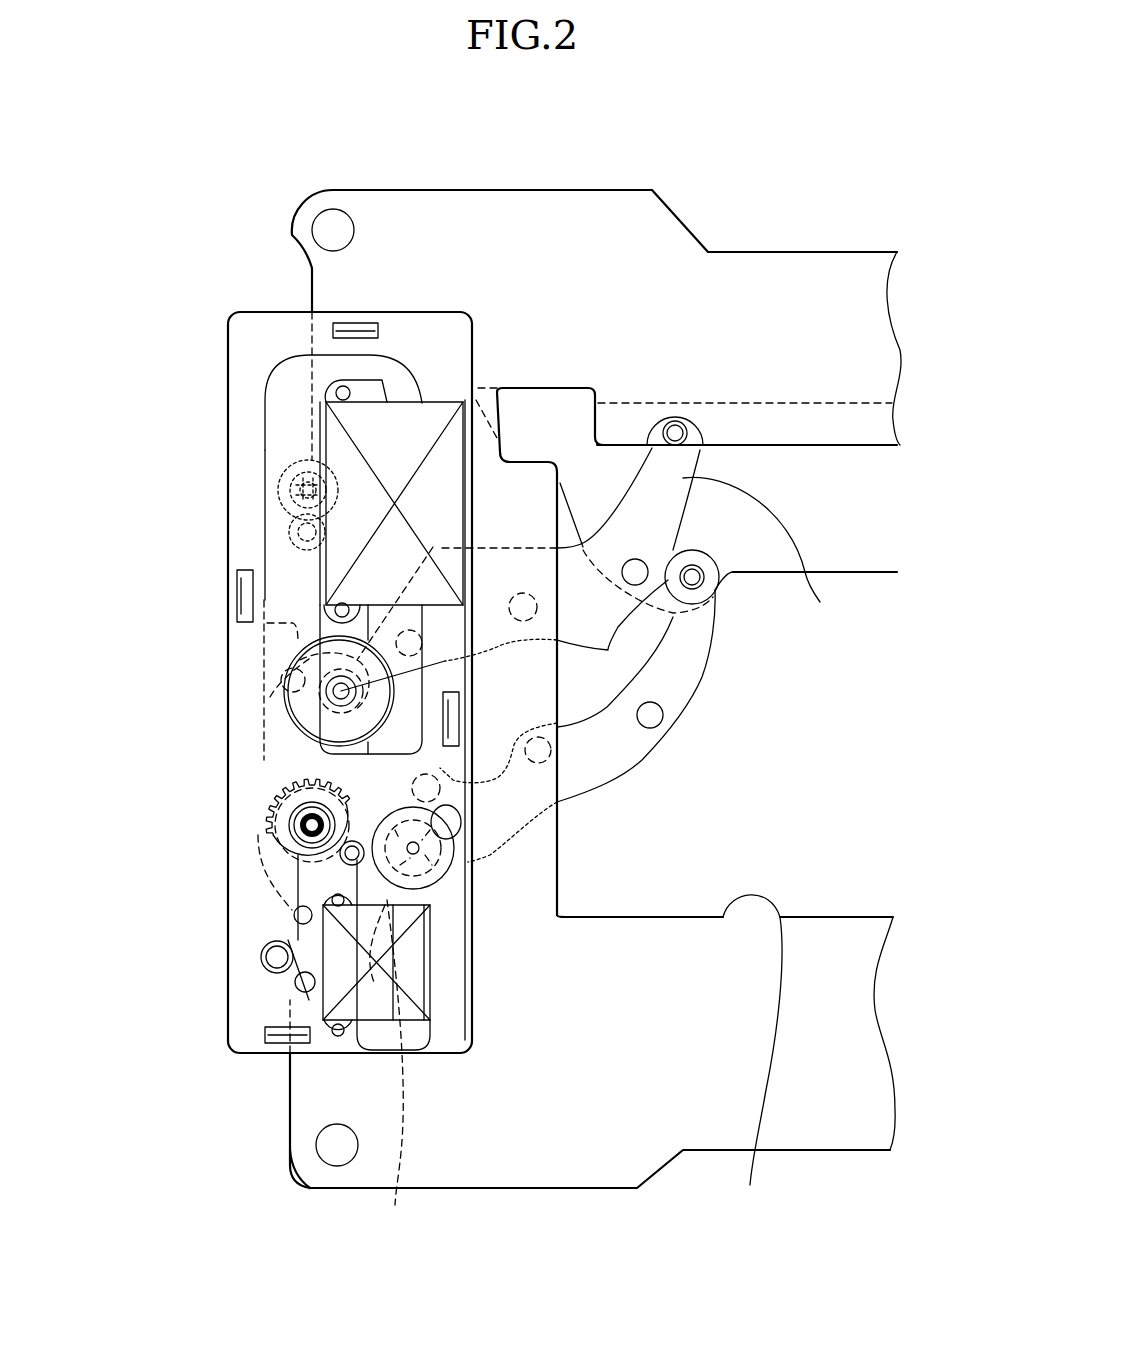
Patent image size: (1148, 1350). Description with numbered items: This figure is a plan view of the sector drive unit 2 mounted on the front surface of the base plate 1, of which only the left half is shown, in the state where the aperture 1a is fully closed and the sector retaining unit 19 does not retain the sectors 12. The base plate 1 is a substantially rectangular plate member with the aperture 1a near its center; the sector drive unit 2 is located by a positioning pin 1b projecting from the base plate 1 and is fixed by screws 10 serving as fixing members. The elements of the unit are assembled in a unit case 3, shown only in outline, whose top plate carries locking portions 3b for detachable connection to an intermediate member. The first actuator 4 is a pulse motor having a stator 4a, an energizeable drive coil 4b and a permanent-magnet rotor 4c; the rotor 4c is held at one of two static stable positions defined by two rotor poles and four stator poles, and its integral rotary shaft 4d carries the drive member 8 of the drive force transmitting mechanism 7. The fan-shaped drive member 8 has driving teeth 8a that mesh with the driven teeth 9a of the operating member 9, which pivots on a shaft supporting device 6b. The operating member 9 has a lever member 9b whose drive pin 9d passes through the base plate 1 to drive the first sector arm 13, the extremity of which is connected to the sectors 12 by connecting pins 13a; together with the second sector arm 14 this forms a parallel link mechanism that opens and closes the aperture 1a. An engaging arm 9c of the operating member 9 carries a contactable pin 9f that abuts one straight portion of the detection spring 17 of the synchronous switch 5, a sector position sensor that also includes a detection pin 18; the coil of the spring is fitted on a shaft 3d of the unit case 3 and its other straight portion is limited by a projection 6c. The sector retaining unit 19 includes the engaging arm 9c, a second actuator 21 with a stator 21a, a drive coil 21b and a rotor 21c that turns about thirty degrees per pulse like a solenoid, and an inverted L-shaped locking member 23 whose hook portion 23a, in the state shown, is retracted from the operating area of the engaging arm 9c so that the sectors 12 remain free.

The base plate 1 is at (782, 250).
The aperture 1a is at (752, 1054).
The positioning pin 1b is at (287, 537).
The sector drive unit 2 is at (430, 300).
The unit case 3 is at (258, 308).
The locking portions 3b is at (372, 318).
The shaft 3d is at (295, 982).
The first actuator 4 is at (430, 388).
The stator 4a is at (258, 414).
The drive coil 4b is at (320, 420).
The rotor 4c is at (285, 658).
The rotary shaft 4d is at (341, 691).
The synchronous switch 5 is at (112, 925).
The shaft supporting device 6b is at (290, 828).
The projection 6c is at (290, 997).
The drive force transmitting mechanism 7 is at (580, 665).
The drive member 8 is at (315, 760).
The driving teeth 8a is at (286, 770).
The operating member 9 is at (400, 762).
The driven teeth 9a is at (298, 800).
The lever member 9b is at (456, 852).
The engaging arm 9c is at (342, 862).
The drive pin 9d is at (560, 803).
The contactable pin 9f is at (470, 898).
The screws 10 is at (272, 490).
The sectors 12 is at (870, 572).
The first sector arm 13 is at (718, 607).
The connecting pins 13a is at (690, 590).
The second sector arm 14 is at (764, 554).
The detection spring 17 is at (262, 957).
The detection pin 18 is at (296, 918).
The sector retaining unit 19 is at (423, 1062).
The second actuator 21 is at (330, 1060).
The stator 21a is at (453, 1040).
The drive coil 21b is at (372, 1048).
The rotor 21c is at (455, 880).
The locking member 23 is at (390, 1068).
The hook portion 23a is at (360, 860).